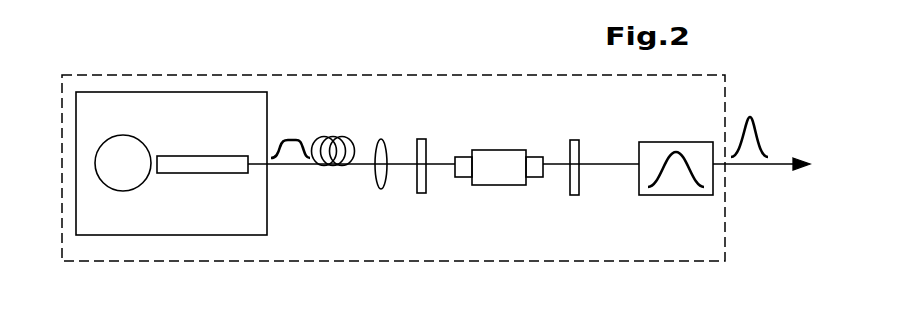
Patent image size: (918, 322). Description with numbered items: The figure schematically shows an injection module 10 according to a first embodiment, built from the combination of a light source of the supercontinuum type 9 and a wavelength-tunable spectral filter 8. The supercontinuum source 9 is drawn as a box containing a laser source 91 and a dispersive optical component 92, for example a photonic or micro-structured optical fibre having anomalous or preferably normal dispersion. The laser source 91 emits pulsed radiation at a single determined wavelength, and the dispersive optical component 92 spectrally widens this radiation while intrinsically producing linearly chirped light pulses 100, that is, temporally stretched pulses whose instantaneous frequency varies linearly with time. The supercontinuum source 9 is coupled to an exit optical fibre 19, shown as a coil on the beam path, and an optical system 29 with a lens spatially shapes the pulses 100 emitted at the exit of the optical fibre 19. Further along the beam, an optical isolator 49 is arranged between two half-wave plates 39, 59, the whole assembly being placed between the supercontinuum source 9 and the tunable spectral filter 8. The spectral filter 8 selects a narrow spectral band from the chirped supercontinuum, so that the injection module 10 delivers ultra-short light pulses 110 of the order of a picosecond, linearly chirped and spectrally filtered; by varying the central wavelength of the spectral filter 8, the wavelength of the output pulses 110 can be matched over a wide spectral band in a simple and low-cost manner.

The injection module 10 is at (224, 75).
The supercontinuum source 9 is at (267, 221).
The laser source 91 is at (113, 192).
The dispersive optical component 92 is at (203, 174).
The linearly chirped light pulses 100 is at (285, 138).
The exit optical fibre 19 is at (335, 137).
The lens 29 is at (386, 180).
The half-wave plate 39 is at (423, 138).
The optical isolator 49 is at (484, 176).
The half-wave plate 59 is at (575, 138).
The tunable spectral filter 8 is at (663, 196).
The ultra-short light pulses 110 is at (757, 132).